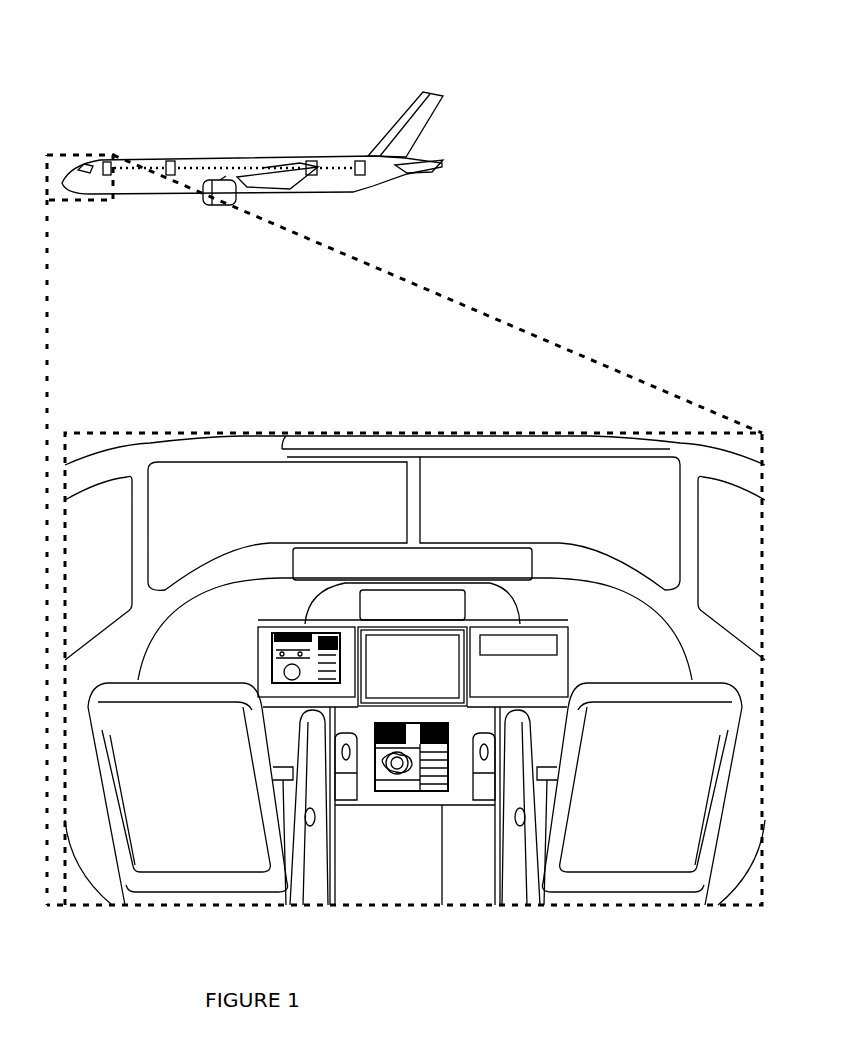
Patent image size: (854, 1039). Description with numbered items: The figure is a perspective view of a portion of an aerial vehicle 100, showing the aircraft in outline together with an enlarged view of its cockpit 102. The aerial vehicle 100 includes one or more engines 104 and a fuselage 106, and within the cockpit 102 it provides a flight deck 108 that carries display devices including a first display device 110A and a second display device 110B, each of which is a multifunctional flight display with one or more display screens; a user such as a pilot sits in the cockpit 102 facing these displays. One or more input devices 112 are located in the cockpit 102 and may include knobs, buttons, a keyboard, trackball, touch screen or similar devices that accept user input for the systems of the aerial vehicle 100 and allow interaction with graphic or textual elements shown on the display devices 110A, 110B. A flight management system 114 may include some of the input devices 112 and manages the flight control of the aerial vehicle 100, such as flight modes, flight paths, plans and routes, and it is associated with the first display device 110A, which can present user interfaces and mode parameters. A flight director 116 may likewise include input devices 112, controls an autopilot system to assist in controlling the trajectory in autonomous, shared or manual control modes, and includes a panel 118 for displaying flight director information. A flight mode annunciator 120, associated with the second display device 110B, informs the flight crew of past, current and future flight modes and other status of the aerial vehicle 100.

The aerial vehicle 100 is at (147, 78).
The cockpit 102 is at (240, 440).
The engine 104 is at (208, 205).
The fuselage 106 is at (128, 184).
The flight deck 108 is at (152, 632).
The first display device 110A is at (450, 640).
The second display device 110B is at (352, 640).
The input device 112 is at (362, 805).
The flight management system 114 is at (442, 792).
The flight director 116 is at (503, 612).
The panel 118 is at (438, 605).
The flight mode annunciator 120 is at (283, 632).